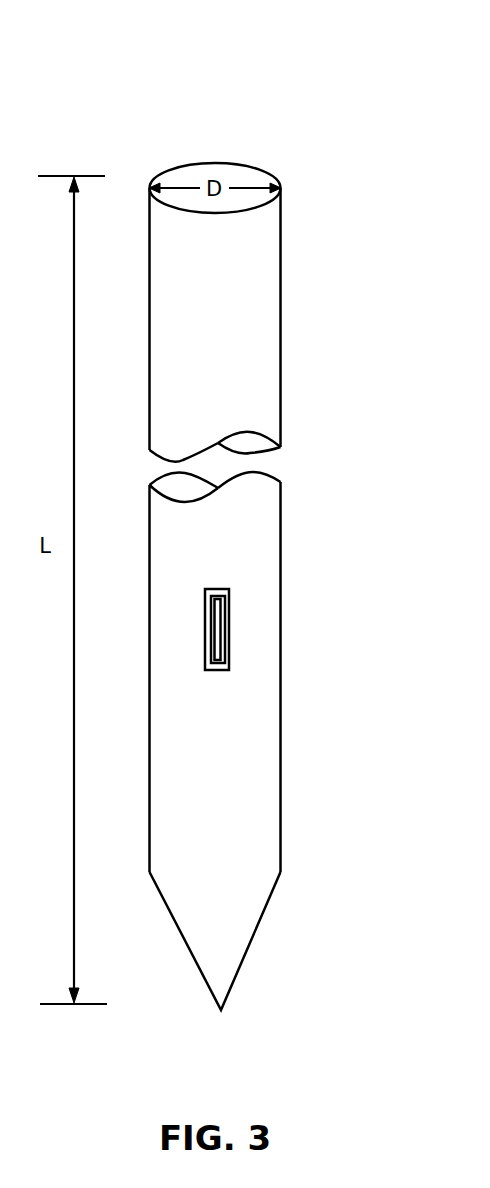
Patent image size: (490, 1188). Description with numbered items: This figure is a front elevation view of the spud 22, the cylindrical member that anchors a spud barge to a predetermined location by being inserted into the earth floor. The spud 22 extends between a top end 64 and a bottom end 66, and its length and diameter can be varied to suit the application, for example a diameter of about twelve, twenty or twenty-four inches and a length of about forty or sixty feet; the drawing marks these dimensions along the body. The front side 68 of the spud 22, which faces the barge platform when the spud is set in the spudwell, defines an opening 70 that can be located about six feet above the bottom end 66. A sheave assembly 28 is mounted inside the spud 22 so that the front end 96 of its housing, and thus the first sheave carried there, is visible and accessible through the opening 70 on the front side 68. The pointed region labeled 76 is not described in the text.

The spud 22 is at (272, 115).
The top end 64 is at (255, 240).
The front side 68 is at (247, 535).
The sheave assembly 28 is at (222, 603).
The front end 96 is at (220, 640).
The opening 70 is at (230, 665).
The bottom end 66 is at (234, 858).
The point of tip 76 is at (221, 1010).